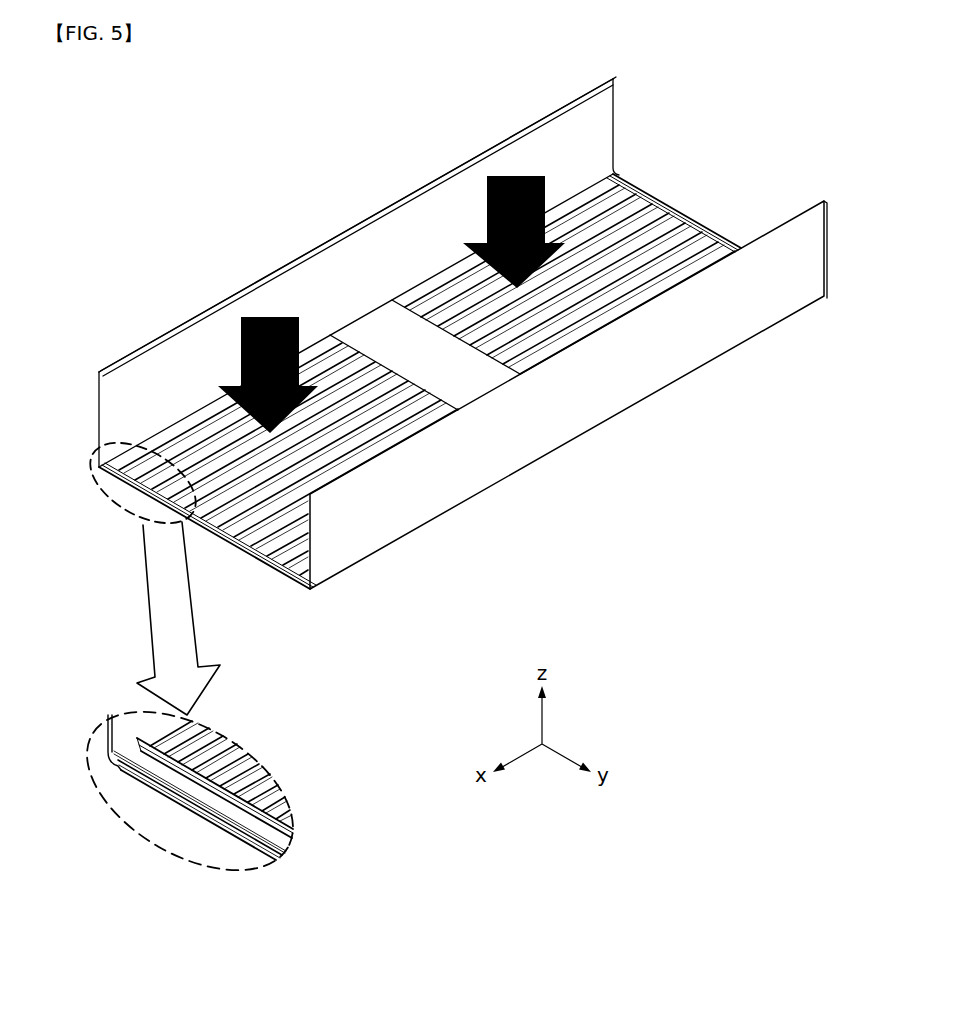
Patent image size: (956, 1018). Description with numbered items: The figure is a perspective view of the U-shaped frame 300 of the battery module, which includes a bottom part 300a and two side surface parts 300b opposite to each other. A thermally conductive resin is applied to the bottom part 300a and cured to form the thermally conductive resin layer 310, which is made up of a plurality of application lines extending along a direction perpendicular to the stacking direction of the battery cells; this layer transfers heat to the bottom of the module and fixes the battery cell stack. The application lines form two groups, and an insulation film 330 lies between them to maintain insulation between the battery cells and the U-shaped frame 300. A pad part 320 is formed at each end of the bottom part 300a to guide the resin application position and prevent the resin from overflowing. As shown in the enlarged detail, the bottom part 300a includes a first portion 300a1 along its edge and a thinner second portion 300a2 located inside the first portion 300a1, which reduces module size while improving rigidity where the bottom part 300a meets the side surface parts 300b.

The U-shaped frame 300 is at (265, 671).
The bottom part 300a is at (258, 565).
The side surface part 300b is at (362, 532).
The thermally conductive resin layer 310 is at (195, 415).
The pad part 320 is at (691, 240).
The insulation film 330 is at (373, 337).
The first portion 300a1 is at (225, 803).
The second portion 300a2 is at (163, 790).